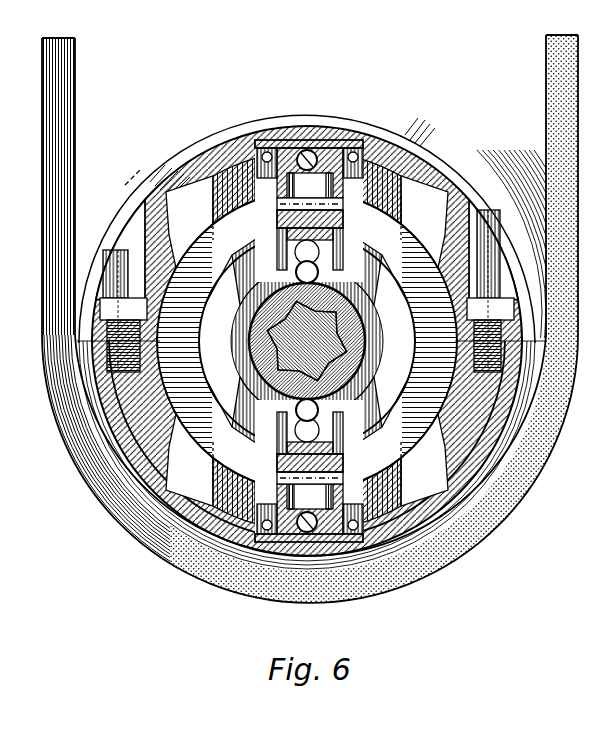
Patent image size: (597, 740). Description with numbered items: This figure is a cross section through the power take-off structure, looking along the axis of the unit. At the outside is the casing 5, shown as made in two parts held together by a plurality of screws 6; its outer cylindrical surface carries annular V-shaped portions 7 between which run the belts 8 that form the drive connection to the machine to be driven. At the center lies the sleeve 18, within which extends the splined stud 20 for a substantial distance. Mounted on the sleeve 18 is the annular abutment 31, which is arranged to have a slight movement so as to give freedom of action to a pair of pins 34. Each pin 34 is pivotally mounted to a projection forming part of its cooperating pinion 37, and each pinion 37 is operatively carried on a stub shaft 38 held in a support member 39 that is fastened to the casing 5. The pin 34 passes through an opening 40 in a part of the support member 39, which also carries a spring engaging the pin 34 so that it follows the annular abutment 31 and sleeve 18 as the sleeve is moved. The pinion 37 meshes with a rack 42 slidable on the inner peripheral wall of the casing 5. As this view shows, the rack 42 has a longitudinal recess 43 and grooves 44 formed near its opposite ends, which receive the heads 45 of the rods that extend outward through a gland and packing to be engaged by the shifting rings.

The casing 5 is at (44, 412).
The screws 6 is at (116, 282).
The annular V-shaped portions 7 is at (152, 158).
The belts 8 is at (77, 147).
The sleeve 18 is at (256, 357).
The splined stud 20 is at (250, 331).
The annular abutment 31 is at (246, 266).
The pins 34 is at (297, 403).
The pinion 37 is at (347, 230).
The stub shaft 38 is at (269, 222).
The support member 39 is at (307, 342).
The opening 40 is at (275, 263).
The rack 42 is at (335, 140).
The longitudinal recess 43 is at (312, 139).
The grooves 44 is at (350, 147).
The heads 45 is at (322, 139).